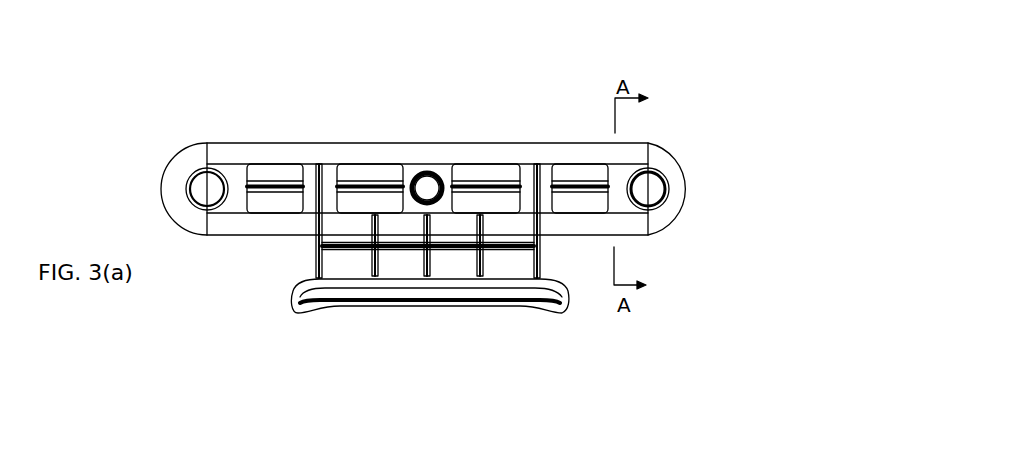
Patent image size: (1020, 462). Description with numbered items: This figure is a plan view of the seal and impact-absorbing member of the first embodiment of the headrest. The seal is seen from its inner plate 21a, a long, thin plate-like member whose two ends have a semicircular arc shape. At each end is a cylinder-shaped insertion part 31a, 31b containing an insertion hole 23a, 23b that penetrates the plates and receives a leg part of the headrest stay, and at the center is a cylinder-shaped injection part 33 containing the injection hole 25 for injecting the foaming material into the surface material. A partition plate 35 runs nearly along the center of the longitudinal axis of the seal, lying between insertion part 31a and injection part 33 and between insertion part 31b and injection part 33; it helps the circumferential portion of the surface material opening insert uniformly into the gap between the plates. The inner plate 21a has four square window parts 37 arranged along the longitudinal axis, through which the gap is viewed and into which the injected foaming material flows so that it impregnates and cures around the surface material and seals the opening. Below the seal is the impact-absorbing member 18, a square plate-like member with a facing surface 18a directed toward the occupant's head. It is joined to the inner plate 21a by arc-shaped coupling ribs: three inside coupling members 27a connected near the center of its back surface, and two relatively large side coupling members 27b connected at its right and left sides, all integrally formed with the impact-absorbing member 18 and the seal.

The impact-absorbing member 18 is at (535, 314).
The facing surface 18a is at (369, 303).
The inner plate 21a is at (527, 157).
The insertion hole 23a is at (656, 193).
The insertion hole 23b is at (209, 186).
The injection hole 25 is at (425, 185).
The inside coupling members 27a is at (480, 257).
The side coupling members 27b is at (316, 262).
The insertion part 31a is at (658, 188).
The insertion part 31b is at (205, 185).
The injection part 33 is at (433, 170).
The partition plate 35 is at (353, 183).
The window parts 37 is at (277, 177).